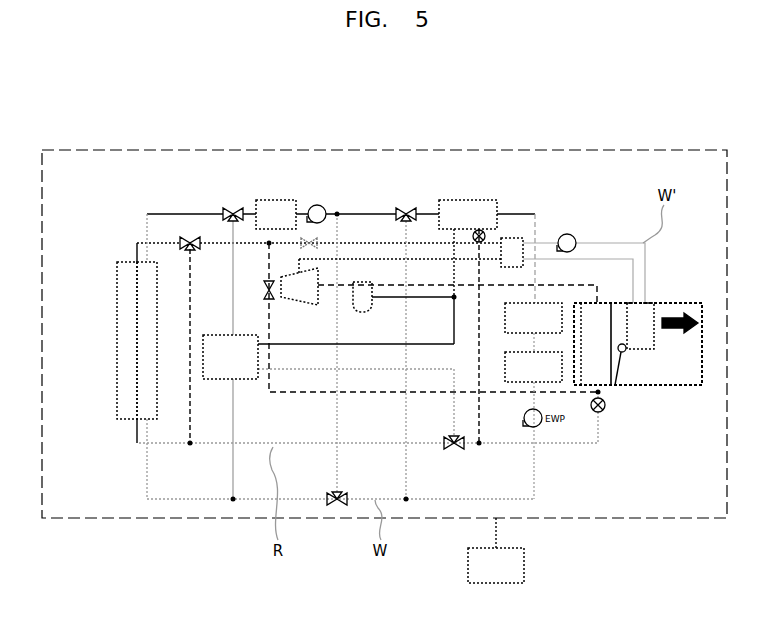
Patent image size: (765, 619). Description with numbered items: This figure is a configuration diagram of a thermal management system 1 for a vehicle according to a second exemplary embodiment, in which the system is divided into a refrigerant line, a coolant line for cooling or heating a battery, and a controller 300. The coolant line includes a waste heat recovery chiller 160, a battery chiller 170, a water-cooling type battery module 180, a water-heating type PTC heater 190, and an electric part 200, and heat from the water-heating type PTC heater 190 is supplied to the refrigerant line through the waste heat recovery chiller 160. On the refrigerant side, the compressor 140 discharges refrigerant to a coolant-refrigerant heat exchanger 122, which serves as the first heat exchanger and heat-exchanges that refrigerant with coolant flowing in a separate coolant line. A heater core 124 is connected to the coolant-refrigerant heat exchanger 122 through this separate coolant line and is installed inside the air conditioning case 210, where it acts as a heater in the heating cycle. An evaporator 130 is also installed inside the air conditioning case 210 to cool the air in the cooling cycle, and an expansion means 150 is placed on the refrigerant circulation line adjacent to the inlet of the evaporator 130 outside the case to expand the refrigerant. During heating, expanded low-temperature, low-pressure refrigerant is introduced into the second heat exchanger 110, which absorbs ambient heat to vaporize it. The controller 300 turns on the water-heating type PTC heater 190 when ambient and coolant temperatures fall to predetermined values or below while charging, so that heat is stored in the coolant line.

The thermal management system for vehicle 1 is at (428, 133).
The second heat exchanger 110 is at (125, 262).
The coolant-refrigerant heat exchanger 122 is at (515, 238).
The heater core 124 is at (650, 303).
The evaporator 130 is at (603, 310).
The compressor 140 is at (318, 276).
The expansion means 150 is at (606, 408).
The waste heat recovery chiller 160 is at (203, 350).
The battery chiller 170 is at (470, 200).
The water-cooling type battery module 180 is at (558, 383).
The water-heating type PTC heater 190 is at (552, 303).
The electric part 200 is at (280, 200).
The air conditioning case 210 is at (682, 303).
The controller 300 is at (524, 565).